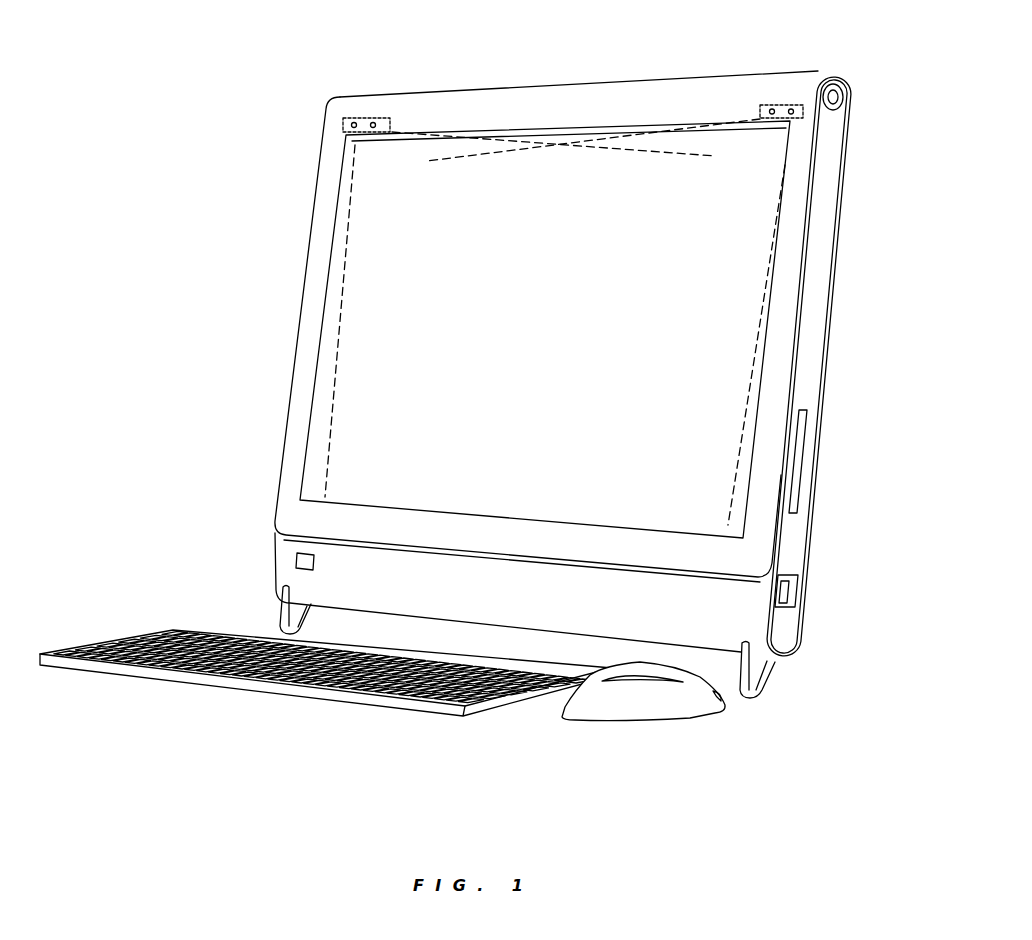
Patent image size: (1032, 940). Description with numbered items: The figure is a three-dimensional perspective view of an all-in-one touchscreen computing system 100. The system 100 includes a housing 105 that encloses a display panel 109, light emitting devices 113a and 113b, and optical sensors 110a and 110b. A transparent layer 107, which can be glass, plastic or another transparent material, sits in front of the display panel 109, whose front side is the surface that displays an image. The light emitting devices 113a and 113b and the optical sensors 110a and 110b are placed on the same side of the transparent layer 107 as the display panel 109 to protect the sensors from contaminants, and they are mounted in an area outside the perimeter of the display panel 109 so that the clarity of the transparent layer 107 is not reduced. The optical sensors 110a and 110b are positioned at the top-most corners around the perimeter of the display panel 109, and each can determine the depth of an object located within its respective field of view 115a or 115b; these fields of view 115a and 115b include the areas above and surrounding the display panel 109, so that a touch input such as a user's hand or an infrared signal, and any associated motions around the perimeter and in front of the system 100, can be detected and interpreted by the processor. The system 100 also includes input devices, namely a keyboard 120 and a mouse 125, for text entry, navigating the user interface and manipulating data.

The system 100 is at (306, 74).
The housing 105 is at (840, 236).
The transparent layer 107 is at (765, 368).
The display panel 109 is at (349, 421).
The optical sensor 110a is at (358, 120).
The optical sensor 110b is at (797, 106).
The light emitting device 113a is at (390, 124).
The light emitting device 113b is at (767, 105).
The field of view 115a is at (392, 170).
The field of view 115b is at (742, 166).
The keyboard 120 is at (170, 628).
The mouse 125 is at (683, 718).